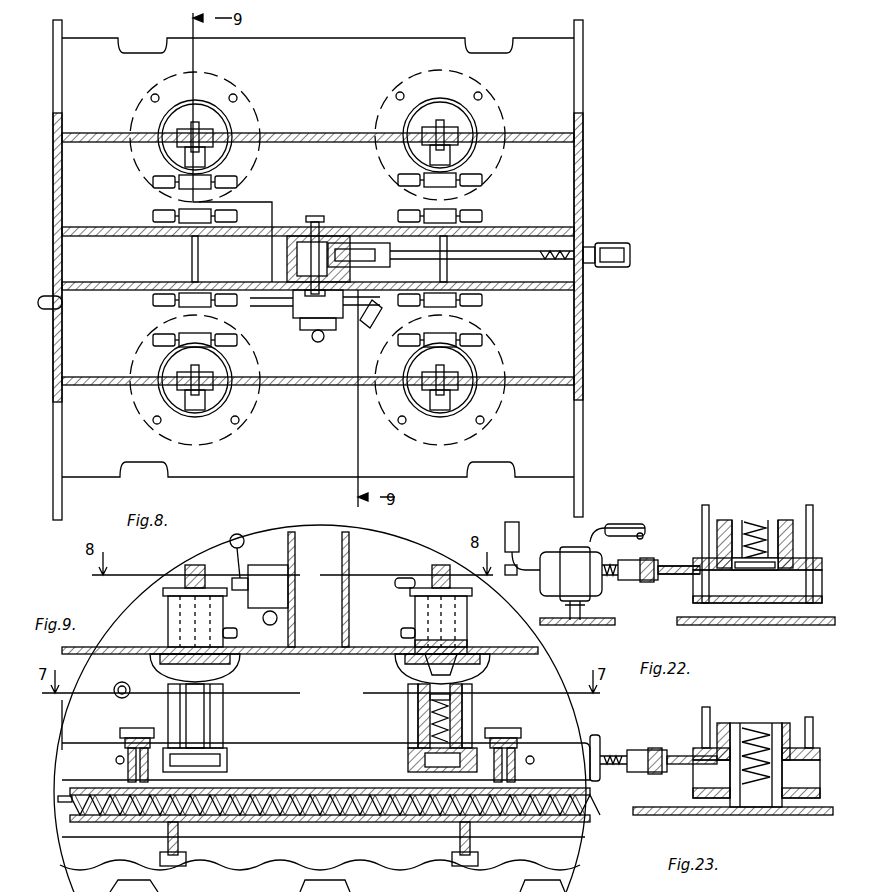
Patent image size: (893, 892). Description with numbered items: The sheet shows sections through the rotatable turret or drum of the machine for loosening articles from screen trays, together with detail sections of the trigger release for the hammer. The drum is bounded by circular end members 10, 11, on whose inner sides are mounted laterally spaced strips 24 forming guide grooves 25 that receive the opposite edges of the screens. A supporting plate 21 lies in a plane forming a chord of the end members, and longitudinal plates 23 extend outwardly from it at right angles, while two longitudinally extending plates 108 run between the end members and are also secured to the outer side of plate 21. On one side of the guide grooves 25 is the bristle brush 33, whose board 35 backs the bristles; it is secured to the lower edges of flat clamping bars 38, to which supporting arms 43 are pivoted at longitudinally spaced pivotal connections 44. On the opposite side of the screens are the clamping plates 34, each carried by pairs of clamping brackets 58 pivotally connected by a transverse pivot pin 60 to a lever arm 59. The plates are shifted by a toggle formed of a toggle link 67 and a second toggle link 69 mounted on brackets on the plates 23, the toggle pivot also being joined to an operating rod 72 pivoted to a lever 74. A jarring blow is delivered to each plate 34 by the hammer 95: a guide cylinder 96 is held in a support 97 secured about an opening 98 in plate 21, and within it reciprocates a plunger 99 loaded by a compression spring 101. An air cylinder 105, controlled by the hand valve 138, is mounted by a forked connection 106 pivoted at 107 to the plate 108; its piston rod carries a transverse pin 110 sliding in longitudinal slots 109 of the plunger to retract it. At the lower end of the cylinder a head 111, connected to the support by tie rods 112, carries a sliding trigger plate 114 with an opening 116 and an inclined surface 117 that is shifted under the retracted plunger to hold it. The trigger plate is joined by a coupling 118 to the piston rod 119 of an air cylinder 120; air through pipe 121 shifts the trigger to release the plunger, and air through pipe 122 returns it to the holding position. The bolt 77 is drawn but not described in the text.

In FIG. 8, the end member 10 is at (62, 352).
In FIG. 9, the end member 10 is at (75, 708).
In FIG. 8, the end member 11 is at (583, 330).
In FIG. 8, the supporting plate 21 is at (357, 52).
In FIG. 9, the supporting plate 21 is at (350, 647).
In FIG. 8, the longitudinal plate 23 is at (510, 227).
In FIG. 9, the longitudinal plate 23 is at (295, 598).
In FIG. 9, the strip 24 is at (250, 752).
In FIG. 9, the guide groove 25 is at (80, 790).
In FIG. 9, the bristle brush 33 is at (395, 822).
In FIG. 9, the clamping plate 34 is at (240, 788).
In FIG. 22, the clamping plate 34 is at (765, 625).
In FIG. 23, the clamping plate 34 is at (688, 815).
In FIG. 9, the board 35 is at (345, 822).
In FIG. 9, the clamping bar 38 is at (168, 845).
In FIG. 9, the supporting arm 43 is at (180, 866).
In FIG. 9, the pivotal connection 44 is at (186, 860).
In FIG. 9, the clamping bracket 58 is at (128, 762).
In FIG. 9, the lever arm 59 is at (132, 728).
In FIG. 9, the transverse pivot pin 60 is at (125, 742).
In FIG. 8, the toggle link 67 is at (352, 243).
In FIG. 8, the toggle link 69 is at (287, 258).
In FIG. 8, the operating rod 72 is at (480, 256).
In FIG. 8, the lever 74 is at (630, 253).
In FIG. 8, the bolt 77 is at (315, 215).
In FIG. 9, the hammer 95 is at (246, 695).
In FIG. 9, the guide cylinder 96 is at (205, 728).
In FIG. 22, the guide cylinder 96 is at (790, 520).
In FIG. 23, the guide cylinder 96 is at (786, 723).
In FIG. 8, the support 97 is at (248, 172).
In FIG. 9, the support 97 is at (240, 668).
In FIG. 8, the opening 98 is at (200, 118).
In FIG. 9, the opening 98 is at (490, 650).
In FIG. 9, the plunger 99 is at (430, 722).
In FIG. 22, the plunger 99 is at (764, 518).
In FIG. 23, the plunger 99 is at (760, 800).
In FIG. 9, the compression spring 101 is at (430, 742).
In FIG. 22, the compression spring 101 is at (750, 520).
In FIG. 23, the compression spring 101 is at (758, 723).
In FIG. 8, the air cylinder 105 is at (177, 120).
In FIG. 9, the air cylinder 105 is at (176, 628).
In FIG. 9, the forked connection 106 is at (180, 588).
In FIG. 8, the pivot 107 is at (205, 125).
In FIG. 8, the longitudinally extending plate 108 is at (292, 133).
In FIG. 9, the longitudinally extending plate 108 is at (195, 565).
In FIG. 9, the longitudinal slot 109 is at (418, 706).
In FIG. 9, the transverse pin 110 is at (437, 658).
In FIG. 9, the head 111 is at (227, 762).
In FIG. 22, the head 111 is at (822, 565).
In FIG. 23, the head 111 is at (820, 755).
In FIG. 9, the tie rod 112 is at (168, 712).
In FIG. 22, the tie rod 112 is at (702, 515).
In FIG. 23, the tie rod 112 is at (710, 712).
In FIG. 22, the trigger plate 114 is at (680, 575).
In FIG. 23, the trigger plate 114 is at (680, 765).
In FIG. 22, the opening 116 is at (725, 582).
In FIG. 22, the inclined surface 117 is at (755, 557).
In FIG. 23, the inclined surface 117 is at (813, 725).
In FIG. 22, the coupling 118 is at (640, 560).
In FIG. 23, the coupling 118 is at (650, 748).
In FIG. 22, the piston rod 119 is at (610, 580).
In FIG. 23, the piston rod 119 is at (612, 750).
In FIG. 22, the air cylinder 120 is at (548, 560).
In FIG. 23, the air cylinder 120 is at (596, 735).
In FIG. 22, the pipe 121 is at (519, 530).
In FIG. 22, the pipe 122 is at (630, 524).
In FIG. 8, the hand valve 138 is at (325, 330).
In FIG. 9, the hand valve 138 is at (268, 565).